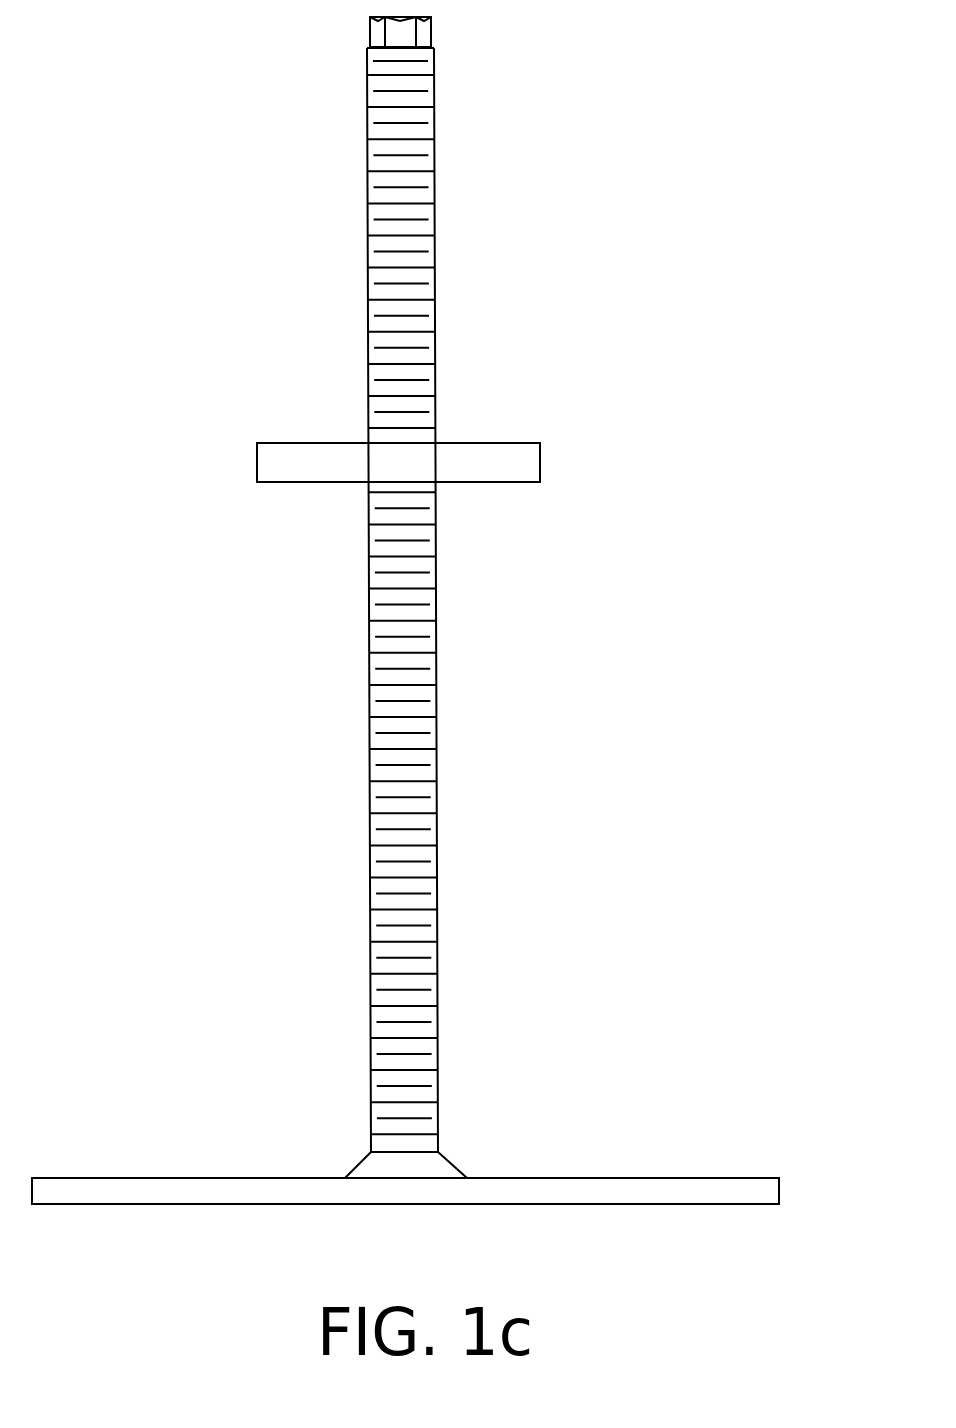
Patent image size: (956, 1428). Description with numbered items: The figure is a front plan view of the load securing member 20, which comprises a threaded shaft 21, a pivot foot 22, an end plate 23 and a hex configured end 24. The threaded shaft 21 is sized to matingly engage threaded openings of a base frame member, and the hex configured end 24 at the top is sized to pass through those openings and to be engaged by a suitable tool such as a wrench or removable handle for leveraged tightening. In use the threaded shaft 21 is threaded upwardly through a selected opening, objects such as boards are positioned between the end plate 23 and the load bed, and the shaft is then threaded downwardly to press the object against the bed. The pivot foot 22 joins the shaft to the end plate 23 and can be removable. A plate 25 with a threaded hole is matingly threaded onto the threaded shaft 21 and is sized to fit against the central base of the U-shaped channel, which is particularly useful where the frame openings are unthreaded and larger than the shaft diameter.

The load securing member 20 is at (670, 658).
The threaded shaft 21 is at (437, 812).
The pivot foot 22 is at (452, 1162).
The end plate 23 is at (713, 1173).
The hex configured end 24 is at (432, 30).
The plate 25 is at (540, 460).